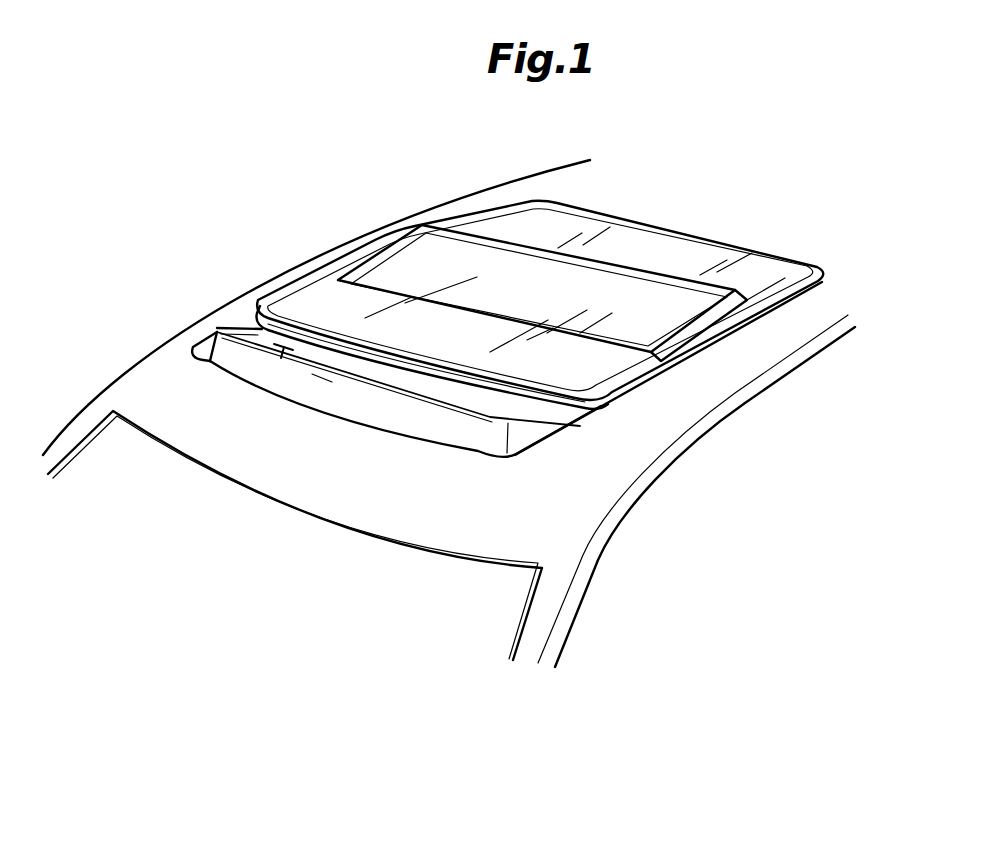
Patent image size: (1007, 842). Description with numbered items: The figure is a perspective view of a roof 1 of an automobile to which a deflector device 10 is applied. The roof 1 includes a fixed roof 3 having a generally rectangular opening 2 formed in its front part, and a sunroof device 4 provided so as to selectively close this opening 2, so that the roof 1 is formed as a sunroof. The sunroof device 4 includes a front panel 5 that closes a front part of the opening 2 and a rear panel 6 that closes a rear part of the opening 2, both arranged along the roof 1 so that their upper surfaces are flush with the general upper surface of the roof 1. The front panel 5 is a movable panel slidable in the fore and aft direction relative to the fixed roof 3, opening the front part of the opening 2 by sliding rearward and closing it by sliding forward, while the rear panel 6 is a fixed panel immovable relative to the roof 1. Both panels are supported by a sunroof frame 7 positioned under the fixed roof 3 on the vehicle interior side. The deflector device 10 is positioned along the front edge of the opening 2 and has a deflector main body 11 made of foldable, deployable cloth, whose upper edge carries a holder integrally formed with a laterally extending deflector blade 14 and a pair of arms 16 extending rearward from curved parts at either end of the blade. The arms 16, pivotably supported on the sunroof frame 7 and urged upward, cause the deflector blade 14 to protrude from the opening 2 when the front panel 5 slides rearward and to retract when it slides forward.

The roof 1 is at (321, 198).
The opening 2 is at (638, 384).
The fixed roof 3 is at (588, 478).
The sunroof device 4 is at (393, 448).
The front panel 5 is at (530, 267).
The rear panel 6 is at (715, 257).
The sunroof frame 7 is at (283, 348).
The deflector device 10 is at (218, 369).
The deflector main body 11 is at (484, 448).
The deflector blade 14 is at (323, 378).
The arms 16 is at (250, 330).